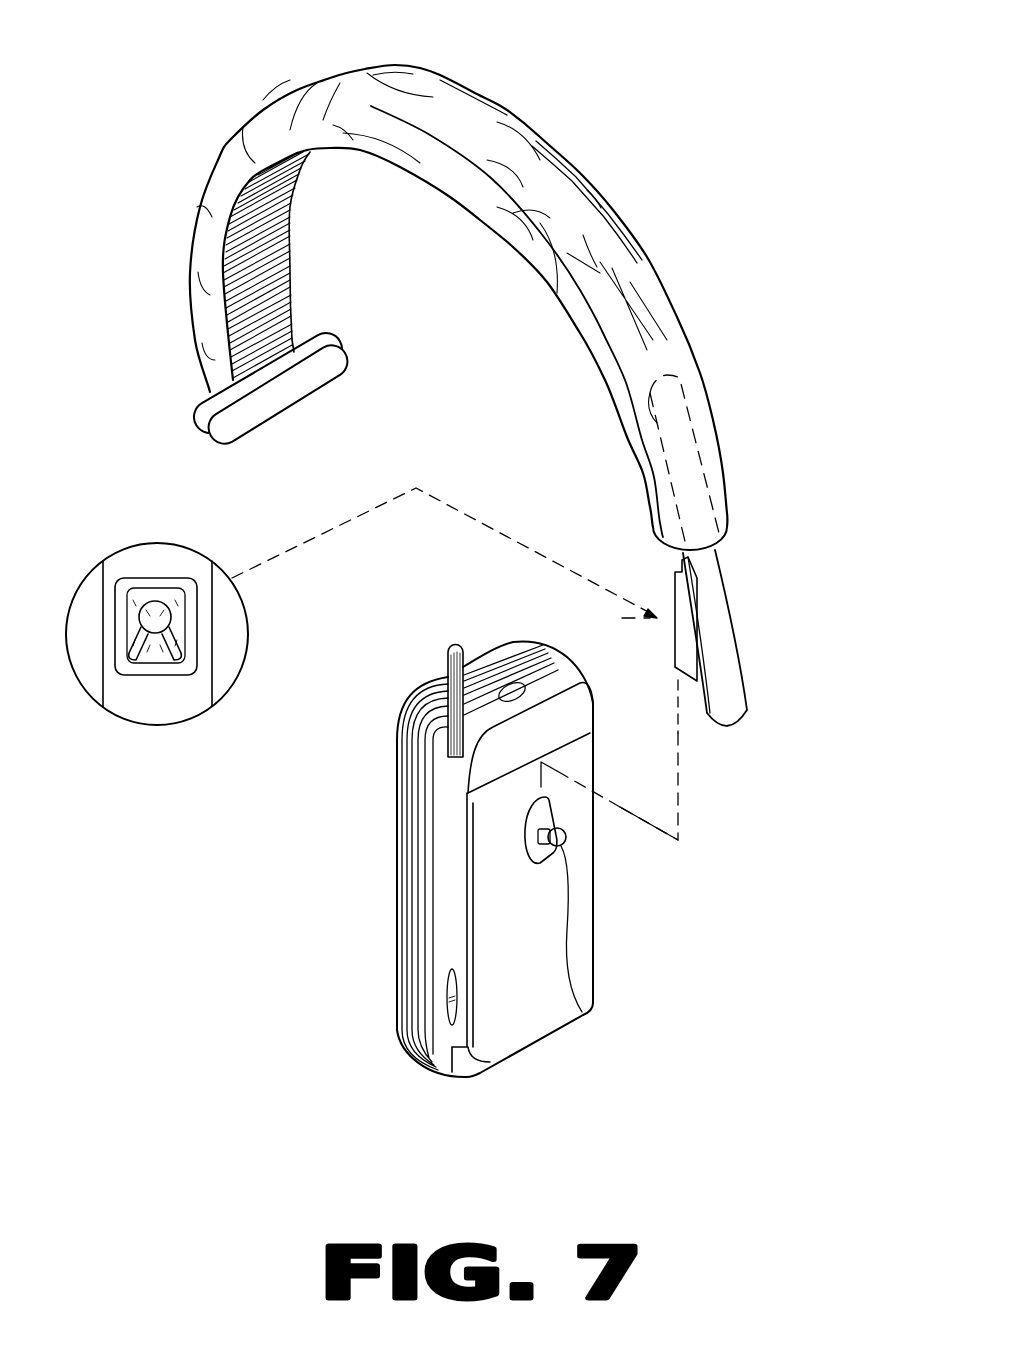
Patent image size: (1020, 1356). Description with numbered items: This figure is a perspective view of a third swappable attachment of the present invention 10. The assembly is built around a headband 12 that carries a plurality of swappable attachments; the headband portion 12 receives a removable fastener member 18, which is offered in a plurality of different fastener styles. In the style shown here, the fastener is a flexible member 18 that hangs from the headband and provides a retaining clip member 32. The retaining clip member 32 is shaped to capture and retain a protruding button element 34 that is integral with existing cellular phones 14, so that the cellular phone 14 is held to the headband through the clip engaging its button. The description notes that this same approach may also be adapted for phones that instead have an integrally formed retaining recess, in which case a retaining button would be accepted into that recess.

The present invention 10 is at (727, 328).
The headband 12 is at (477, 93).
The cellular phone 14 is at (397, 1003).
The removable fastener member 18 is at (741, 655).
The retaining clip member 32 is at (678, 594).
The protruding button element 34 is at (582, 1012).